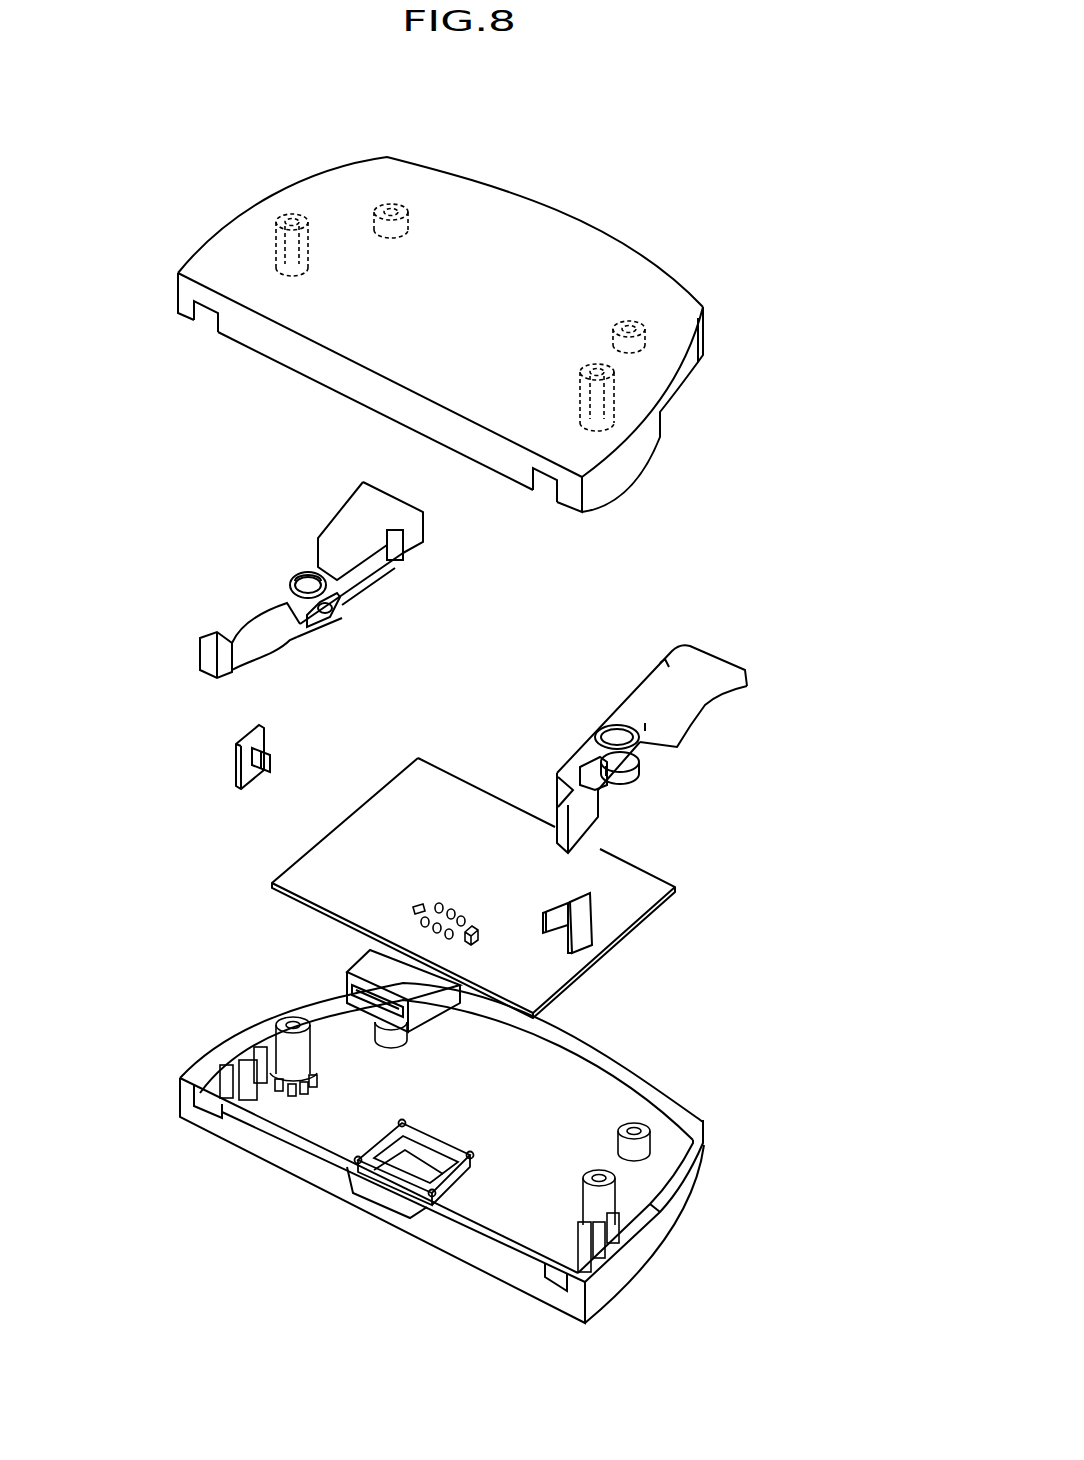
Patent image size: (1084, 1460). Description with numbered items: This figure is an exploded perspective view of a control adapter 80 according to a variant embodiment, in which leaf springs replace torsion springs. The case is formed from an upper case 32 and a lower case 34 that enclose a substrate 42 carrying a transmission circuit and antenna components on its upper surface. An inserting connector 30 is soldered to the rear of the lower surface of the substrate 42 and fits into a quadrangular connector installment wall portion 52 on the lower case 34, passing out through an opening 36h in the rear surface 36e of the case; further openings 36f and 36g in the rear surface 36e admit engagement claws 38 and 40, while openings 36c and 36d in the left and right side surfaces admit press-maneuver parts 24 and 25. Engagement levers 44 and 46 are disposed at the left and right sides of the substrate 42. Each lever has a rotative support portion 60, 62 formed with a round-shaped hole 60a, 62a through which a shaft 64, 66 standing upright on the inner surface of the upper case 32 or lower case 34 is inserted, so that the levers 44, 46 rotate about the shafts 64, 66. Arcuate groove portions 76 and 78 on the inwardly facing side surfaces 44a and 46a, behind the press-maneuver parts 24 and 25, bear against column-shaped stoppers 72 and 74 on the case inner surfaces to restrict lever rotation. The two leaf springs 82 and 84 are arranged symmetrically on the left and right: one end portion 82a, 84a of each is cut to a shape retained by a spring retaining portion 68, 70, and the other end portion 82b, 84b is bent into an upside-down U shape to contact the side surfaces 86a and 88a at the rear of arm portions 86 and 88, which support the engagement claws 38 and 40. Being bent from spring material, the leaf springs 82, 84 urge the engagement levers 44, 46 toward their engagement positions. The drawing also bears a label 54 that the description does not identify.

The control adapter 80 is at (213, 157).
The upper case 32 is at (600, 216).
The lower case 34 is at (660, 1278).
The opening 36c is at (313, 1010).
The opening 36d is at (682, 381).
The rear surface 36e is at (450, 1236).
The opening 36f is at (196, 323).
The opening 36g is at (552, 487).
The opening 36h is at (368, 1196).
The press-maneuver part 24 is at (363, 482).
The press-maneuver part 25 is at (740, 689).
The inserting connector 30 is at (365, 963).
The engagement claw 38 is at (200, 656).
The engagement claw 40 is at (562, 839).
The substrate 42 is at (550, 983).
The engagement lever 44 is at (350, 626).
The inwardly facing side surface 44a is at (367, 577).
The engagement lever 46 is at (722, 644).
The inwardly facing side surface 46a is at (620, 720).
The connector installment wall portion 52 is at (430, 1133).
The fixing portion 54 is at (228, 477).
The rotative support portion 60 is at (290, 583).
The round-shaped hole 60a is at (310, 572).
The rotative support portion 62 is at (640, 754).
The round-shaped hole 62a is at (605, 733).
The shaft 64 is at (306, 245).
The shaft 66 is at (578, 401).
The spring retaining portion 68 is at (250, 1061).
The spring retaining portion 70 is at (622, 1239).
The stopper 72 is at (411, 229).
The stopper 74 is at (638, 316).
The arcuate groove portion 76 is at (405, 548).
The arcuate groove portion 78 is at (662, 665).
The leaf spring 82 is at (282, 733).
The end portion 82a is at (236, 746).
The end portion 82b is at (270, 763).
The leaf spring 84 is at (605, 912).
The end portion 84a is at (580, 898).
The end portion 84b is at (543, 922).
The arm portion 86 is at (290, 640).
The side surface 86a is at (263, 603).
The arm portion 88 is at (563, 764).
The side surface 88a is at (590, 774).